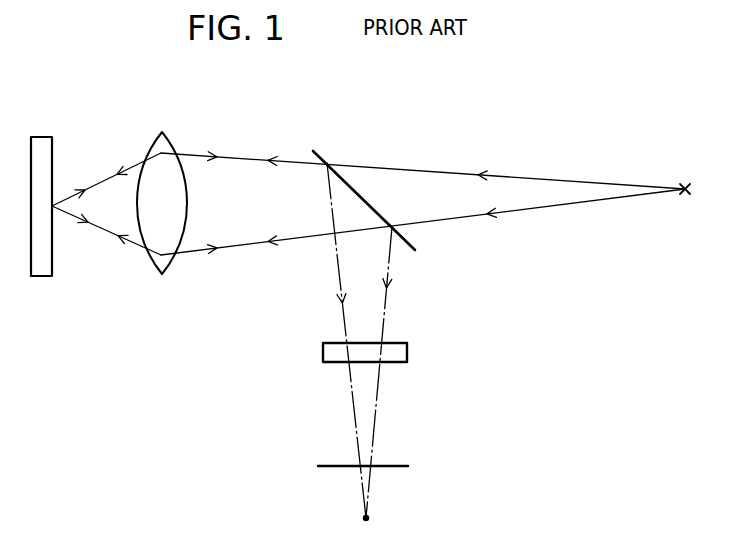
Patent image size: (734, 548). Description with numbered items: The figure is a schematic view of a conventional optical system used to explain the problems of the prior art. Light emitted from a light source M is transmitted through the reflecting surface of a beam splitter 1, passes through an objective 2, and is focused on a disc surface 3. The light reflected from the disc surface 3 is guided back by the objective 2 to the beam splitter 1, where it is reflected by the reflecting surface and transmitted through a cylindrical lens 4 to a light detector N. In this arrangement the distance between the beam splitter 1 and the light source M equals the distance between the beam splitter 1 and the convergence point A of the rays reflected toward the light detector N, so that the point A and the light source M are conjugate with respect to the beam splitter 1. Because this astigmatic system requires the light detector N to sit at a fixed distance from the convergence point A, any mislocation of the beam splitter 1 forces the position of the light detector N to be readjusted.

The beam splitter 1 is at (313, 152).
The objective 2 is at (160, 137).
The disc surface 3 is at (45, 148).
The cylindrical lens 4 is at (405, 350).
The light source M is at (684, 182).
The light detector N is at (408, 464).
The convergence point A is at (369, 519).